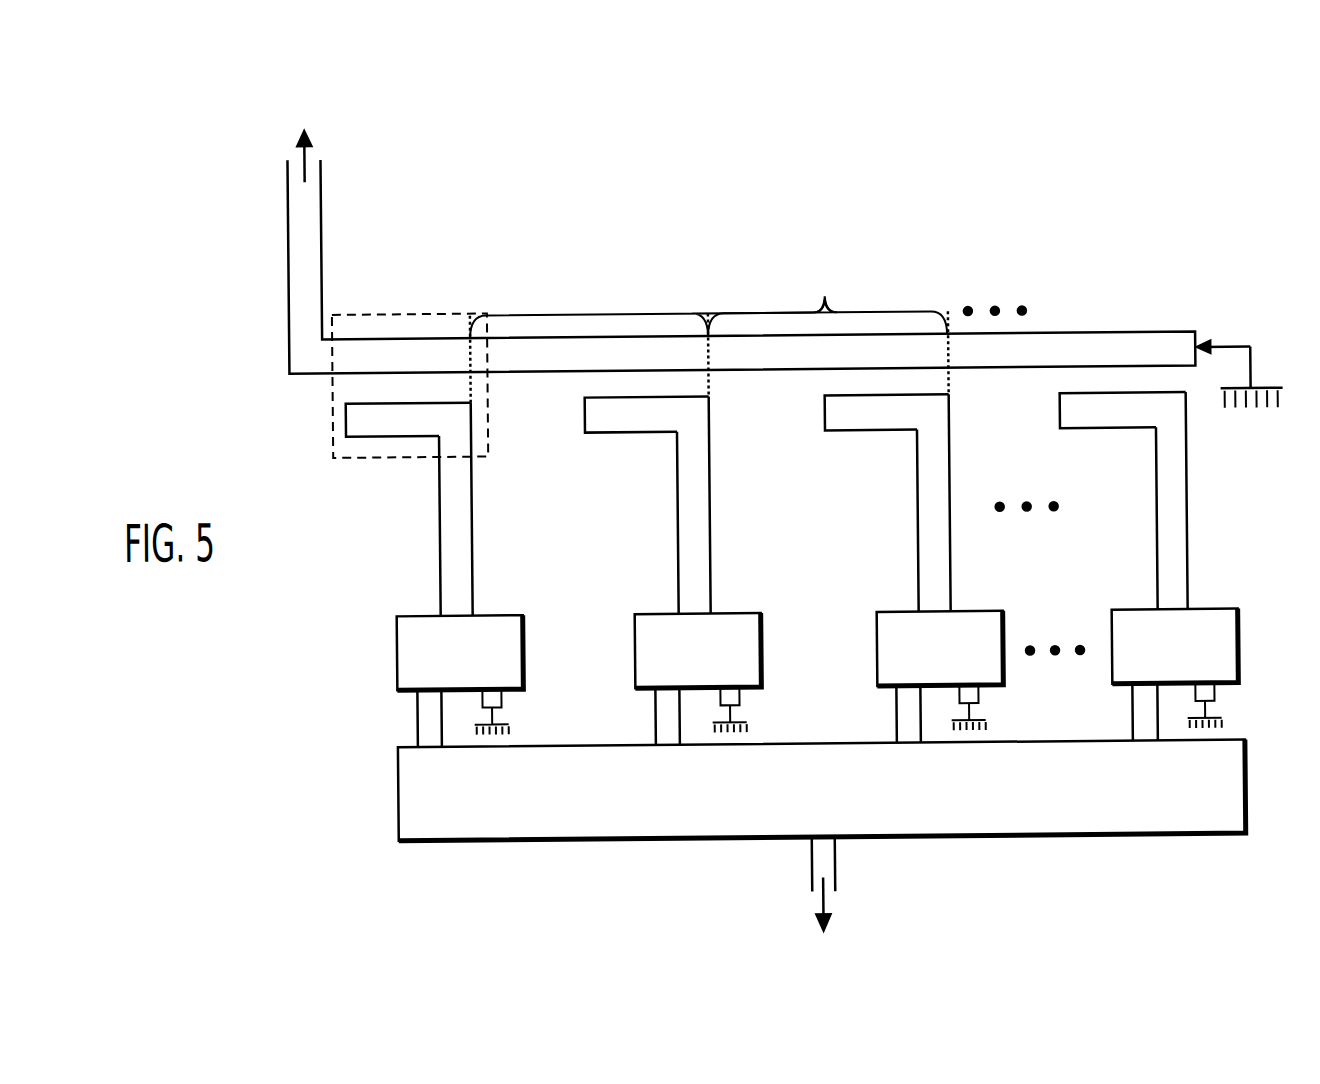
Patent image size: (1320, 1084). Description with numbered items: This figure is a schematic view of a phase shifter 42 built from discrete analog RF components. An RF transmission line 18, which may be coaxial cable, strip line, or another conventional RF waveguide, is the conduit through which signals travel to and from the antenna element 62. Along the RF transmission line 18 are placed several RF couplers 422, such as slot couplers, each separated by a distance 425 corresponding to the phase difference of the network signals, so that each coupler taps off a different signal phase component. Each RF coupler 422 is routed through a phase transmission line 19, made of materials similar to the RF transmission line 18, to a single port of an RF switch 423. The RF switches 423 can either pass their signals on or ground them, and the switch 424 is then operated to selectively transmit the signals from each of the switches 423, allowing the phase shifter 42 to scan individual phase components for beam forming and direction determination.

The RF transmission line 18 is at (325, 226).
The antenna element 62 is at (304, 135).
The phase shifter 42 is at (1061, 210).
The distance 425 is at (583, 258).
The RF coupler 422 is at (336, 421).
The phase transmission line 19 is at (474, 522).
The RF switch 423 is at (396, 652).
The switch 424 is at (396, 793).